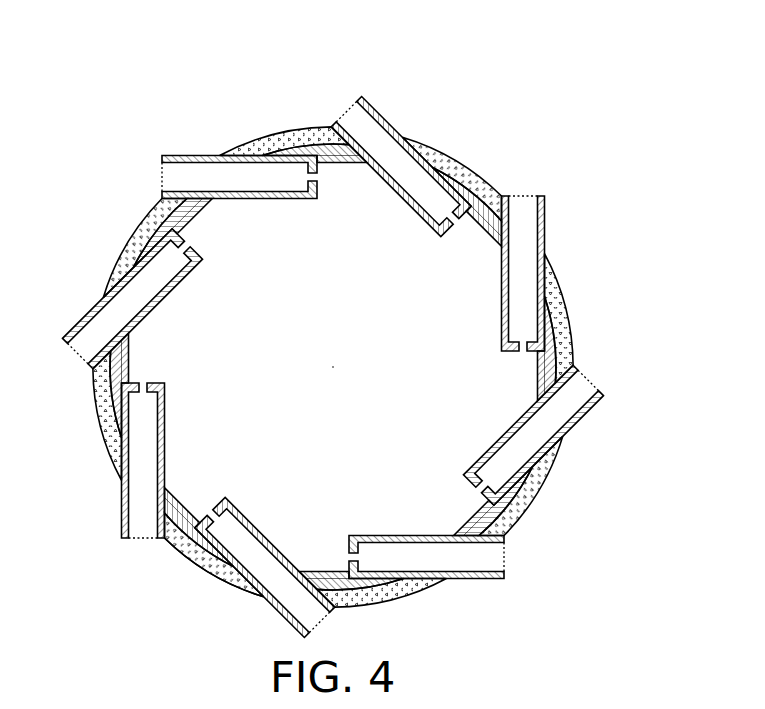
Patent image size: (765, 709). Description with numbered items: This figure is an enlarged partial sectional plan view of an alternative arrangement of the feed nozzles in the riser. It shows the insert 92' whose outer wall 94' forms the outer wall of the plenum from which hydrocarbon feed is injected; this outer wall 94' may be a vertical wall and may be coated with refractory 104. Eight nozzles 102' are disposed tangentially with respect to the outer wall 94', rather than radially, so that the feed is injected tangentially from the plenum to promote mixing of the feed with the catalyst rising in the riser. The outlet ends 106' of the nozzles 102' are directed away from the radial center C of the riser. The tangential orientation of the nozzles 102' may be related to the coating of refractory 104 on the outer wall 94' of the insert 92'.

The insert 92' is at (355, 367).
The outer wall of the insert 94' is at (333, 367).
The nozzles 102' is at (172, 332).
The refractory 104 is at (203, 577).
The outlet ends 106' is at (219, 124).
The radial center C is at (333, 367).